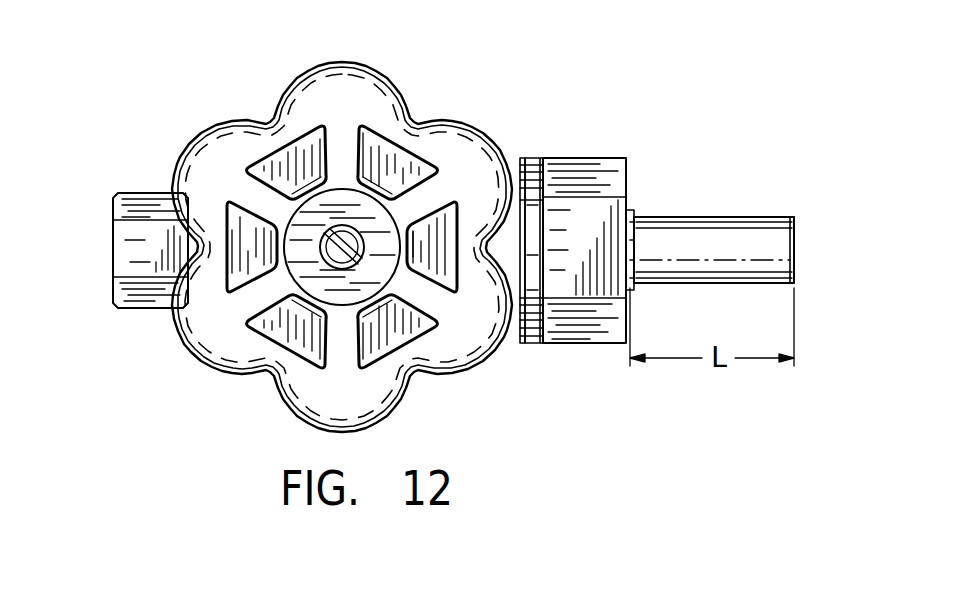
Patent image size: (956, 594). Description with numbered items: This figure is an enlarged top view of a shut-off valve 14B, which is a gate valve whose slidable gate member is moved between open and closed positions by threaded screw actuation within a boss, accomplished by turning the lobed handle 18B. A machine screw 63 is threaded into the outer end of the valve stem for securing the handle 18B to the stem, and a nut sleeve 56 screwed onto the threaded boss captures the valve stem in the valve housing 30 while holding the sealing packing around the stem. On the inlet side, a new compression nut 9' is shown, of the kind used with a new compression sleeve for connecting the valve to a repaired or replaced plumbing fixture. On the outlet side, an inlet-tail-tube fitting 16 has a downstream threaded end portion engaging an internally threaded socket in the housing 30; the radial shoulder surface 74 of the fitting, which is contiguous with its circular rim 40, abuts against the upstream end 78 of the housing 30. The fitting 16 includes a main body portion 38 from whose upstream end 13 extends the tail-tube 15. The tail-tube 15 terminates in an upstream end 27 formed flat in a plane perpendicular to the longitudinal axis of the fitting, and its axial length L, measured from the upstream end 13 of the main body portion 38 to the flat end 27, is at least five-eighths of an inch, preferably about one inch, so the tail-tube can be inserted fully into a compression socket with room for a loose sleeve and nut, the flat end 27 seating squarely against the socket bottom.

The new compression nut 9' is at (109, 292).
The valve 14B is at (290, 62).
The handle 18B is at (394, 78).
The machine screw 63 is at (358, 239).
The nut sleeve 56 is at (290, 326).
The radial shoulder surface 74 is at (497, 350).
The valve housing 30 is at (522, 160).
The circular rim 40 is at (536, 158).
The upstream end of the housing 78 is at (541, 345).
The main body portion 38 is at (600, 158).
The upstream end of the main body portion 13 is at (636, 214).
The inlet-tail-tube fitting 16 is at (718, 213).
The tail-tube 15 is at (772, 216).
The upstream end 27 is at (794, 268).